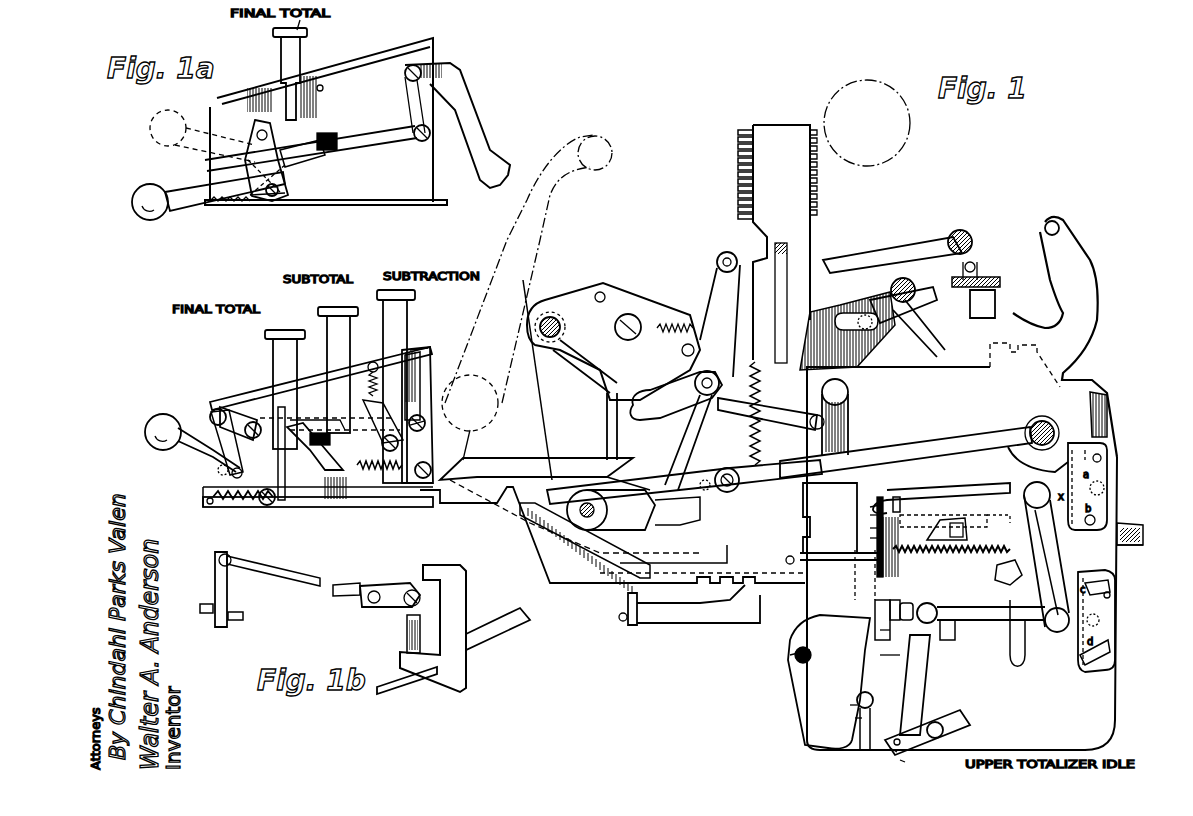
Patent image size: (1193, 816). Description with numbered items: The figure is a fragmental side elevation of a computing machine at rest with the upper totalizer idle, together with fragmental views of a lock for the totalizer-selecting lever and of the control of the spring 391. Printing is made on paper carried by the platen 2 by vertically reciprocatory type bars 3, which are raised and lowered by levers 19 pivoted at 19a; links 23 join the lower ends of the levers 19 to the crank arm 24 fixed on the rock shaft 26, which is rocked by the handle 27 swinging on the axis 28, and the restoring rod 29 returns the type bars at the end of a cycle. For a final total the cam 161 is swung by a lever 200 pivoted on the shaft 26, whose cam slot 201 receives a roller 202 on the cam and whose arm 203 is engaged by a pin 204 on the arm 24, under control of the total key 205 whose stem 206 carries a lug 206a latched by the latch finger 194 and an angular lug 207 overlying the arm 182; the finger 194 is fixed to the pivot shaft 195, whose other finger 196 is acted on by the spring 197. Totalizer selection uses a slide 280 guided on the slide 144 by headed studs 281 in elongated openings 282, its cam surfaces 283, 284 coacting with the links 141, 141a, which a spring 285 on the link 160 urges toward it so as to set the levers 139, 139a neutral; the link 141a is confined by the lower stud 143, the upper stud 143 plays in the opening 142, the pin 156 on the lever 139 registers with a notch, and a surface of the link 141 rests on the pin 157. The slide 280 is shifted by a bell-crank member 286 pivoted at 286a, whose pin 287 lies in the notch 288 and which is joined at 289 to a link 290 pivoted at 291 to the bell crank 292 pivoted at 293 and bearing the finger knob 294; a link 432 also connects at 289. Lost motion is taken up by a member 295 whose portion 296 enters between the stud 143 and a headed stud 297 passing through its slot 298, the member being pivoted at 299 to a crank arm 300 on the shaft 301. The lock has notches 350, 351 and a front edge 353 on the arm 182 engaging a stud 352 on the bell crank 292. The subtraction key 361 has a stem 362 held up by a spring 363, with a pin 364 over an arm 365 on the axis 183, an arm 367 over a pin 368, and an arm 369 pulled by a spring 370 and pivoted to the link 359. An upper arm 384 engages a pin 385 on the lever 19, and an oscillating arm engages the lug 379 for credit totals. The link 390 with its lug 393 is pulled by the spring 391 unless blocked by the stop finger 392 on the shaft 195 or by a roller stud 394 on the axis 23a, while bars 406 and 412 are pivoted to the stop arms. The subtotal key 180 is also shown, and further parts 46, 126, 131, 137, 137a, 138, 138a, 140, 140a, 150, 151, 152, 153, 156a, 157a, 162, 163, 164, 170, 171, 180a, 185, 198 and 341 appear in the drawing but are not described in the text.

In FIG. 1, the platen 2 is at (826, 97).
In FIG. 1, the type bars 3 is at (805, 127).
In FIG. 1, the levers 19 is at (1048, 310).
In FIG. 1, the pivot 19a is at (985, 318).
In FIG. 1, the links 23 is at (927, 452).
In FIG. 1, the axis 23a is at (1032, 425).
In FIG. 1, the crank arm 24 is at (684, 470).
In FIG. 1, the rock shaft 26 is at (580, 498).
In FIG. 1, the handle 27 is at (505, 213).
In FIG. 1, the axis 28 is at (493, 403).
In FIG. 1, the restoring rod 29 is at (891, 290).
In FIG. 1, the bracket 46 is at (625, 605).
In FIG. 1, the pawl 126 is at (935, 528).
In FIG. 1, the arm 131 is at (935, 345).
In FIG. 1, the stud 137 is at (997, 578).
In FIG. 1, the stud 137a is at (1010, 663).
In FIG. 1, the stud 138 is at (1100, 516).
In FIG. 1, the stud 138a is at (1112, 590).
In FIG. 1, the lever 139 is at (1110, 462).
In FIG. 1, the lever 139a is at (1112, 598).
In FIG. 1, the stud 140 is at (1108, 488).
In FIG. 1, the stud 140a is at (1100, 622).
In FIG. 1, the link 141 is at (997, 490).
In FIG. 1, the link 141a is at (1000, 607).
In FIG. 1, the opening 142 is at (900, 490).
In FIG. 1, the stud 143 is at (901, 504).
In FIG. 1, the slide 144 is at (857, 493).
In FIG. 1, the link 150 is at (795, 418).
In FIG. 1, the spring 151 is at (765, 388).
In FIG. 1, the link 152 is at (707, 298).
In FIG. 1, the pivot 153 is at (717, 262).
In FIG. 1, the pin 156 is at (1110, 450).
In FIG. 1, the cam plate 156a is at (1085, 592).
In FIG. 1, the pin 157 is at (1050, 555).
In FIG. 1, the lever 157a is at (1075, 665).
In FIG. 1, the link 160 is at (1055, 570).
In FIG. 1, the cam 161 is at (708, 420).
In FIG. 1, the stud 162 is at (636, 320).
In FIG. 1, the arm 163 is at (672, 400).
In FIG. 1, the pivot 164 is at (695, 380).
In FIG. 1, the pin 170 is at (682, 351).
In FIG. 1, the pin 171 is at (597, 292).
In FIG. 1, the subtotal key 180 is at (320, 310).
In FIG. 1, the subtotal key stem 180a is at (330, 355).
In FIG. 1A, the arm 182 is at (355, 160).
In FIG. 1A, the axis 183 is at (430, 140).
In FIG. 1, the axis 183 is at (427, 423).
In FIG. 1A, the lever 185 is at (482, 130).
In FIG. 1, the latch finger 194 is at (216, 425).
In FIG. 1B, the pivot shaft 195 is at (337, 593).
In FIG. 1, the pivot shaft 195 is at (210, 413).
In FIG. 1B, the finger 196 is at (228, 608).
In FIG. 1B, the contractile spring 197 is at (236, 590).
In FIG. 1B, the pin 198 is at (243, 618).
In FIG. 1, the lever 200 is at (550, 413).
In FIG. 1, the cam slot 201 is at (578, 383).
In FIG. 1, the roller 202 is at (550, 316).
In FIG. 1, the arm 203 is at (712, 523).
In FIG. 1, the pin 204 is at (724, 470).
In FIG. 1A, the total key 205 is at (273, 40).
In FIG. 1, the total key 205 is at (265, 333).
In FIG. 1A, the stem 206 is at (281, 58).
In FIG. 1, the stem 206 is at (273, 360).
In FIG. 1, the lug 206a is at (236, 470).
In FIG. 1A, the angular lug 207 is at (337, 140).
In FIG. 1, the angular lug 207 is at (318, 430).
In FIG. 1, the slide 280 is at (870, 515).
In FIG. 1, the headed studs 281 is at (870, 528).
In FIG. 1, the elongated openings 282 is at (870, 540).
In FIG. 1, the cam surface 283 is at (870, 506).
In FIG. 1, the cam surface 284 is at (883, 620).
In FIG. 1, the contractile spring 285 is at (940, 553).
In FIG. 1, the bell crank member 286 is at (795, 668).
In FIG. 1, the axis 286a is at (790, 657).
In FIG. 1, the pin 287 is at (855, 692).
In FIG. 1, the notch 288 is at (885, 659).
In FIG. 1, the pivot 289 is at (822, 620).
In FIG. 1, the link 290 is at (510, 540).
In FIG. 1A, the pivot 291 is at (255, 135).
In FIG. 1, the pivot 291 is at (315, 478).
In FIG. 1A, the totalizer-selecting lever 292 is at (193, 206).
In FIG. 1, the totalizer-selecting lever 292 is at (180, 462).
In FIG. 1A, the pivot 293 is at (273, 200).
In FIG. 1, the pivot 293 is at (258, 505).
In FIG. 1A, the finger knob 294 is at (152, 185).
In FIG. 1, the finger knob 294 is at (150, 446).
In FIG. 1, the member 295 is at (915, 712).
In FIG. 1, the portion 296 is at (895, 640).
In FIG. 1, the headed stud 297 is at (938, 613).
In FIG. 1, the slot 298 is at (922, 672).
In FIG. 1, the pivot 299 is at (892, 748).
In FIG. 1, the crank arm 300 is at (905, 762).
In FIG. 1, the shaft 301 is at (933, 722).
In FIG. 1A, the pin 341 is at (322, 91).
In FIG. 1A, the notch 350 is at (250, 120).
In FIG. 1A, the notch 351 is at (297, 166).
In FIG. 1A, the stud 352 is at (248, 180).
In FIG. 1A, the front edge 353 is at (250, 194).
In FIG. 1, the link 359 is at (585, 565).
In FIG. 1, the subtraction key 361 is at (410, 296).
In FIG. 1, the stem 362 is at (400, 322).
In FIG. 1, the contractile spring 363 is at (368, 365).
In FIG. 1, the pin 364 is at (380, 425).
In FIG. 1, the arm 365 is at (330, 420).
In FIG. 1, the arm 367 is at (425, 360).
In FIG. 1, the pin 368 is at (425, 345).
In FIG. 1, the arm 369 is at (428, 446).
In FIG. 1, the contractile spring 370 is at (372, 463).
In FIG. 1, the lug 379 is at (1005, 522).
In FIG. 1, the upper arm 384 is at (1000, 280).
In FIG. 1, the pin 385 is at (977, 268).
In FIG. 1B, the link 390 is at (492, 648).
In FIG. 1, the link 390 is at (310, 509).
In FIG. 1B, the contractile spring 391 is at (400, 692).
In FIG. 1, the contractile spring 391 is at (210, 492).
In FIG. 1B, the stop finger 392 is at (392, 610).
In FIG. 1, the stop finger 392 is at (242, 418).
In FIG. 1B, the lug 393 is at (423, 570).
In FIG. 1, the roller stud 394 is at (1050, 406).
In FIG. 1, the bar 406 is at (1130, 547).
In FIG. 1, the bar 412 is at (1143, 540).
In FIG. 1, the link 432 is at (848, 563).